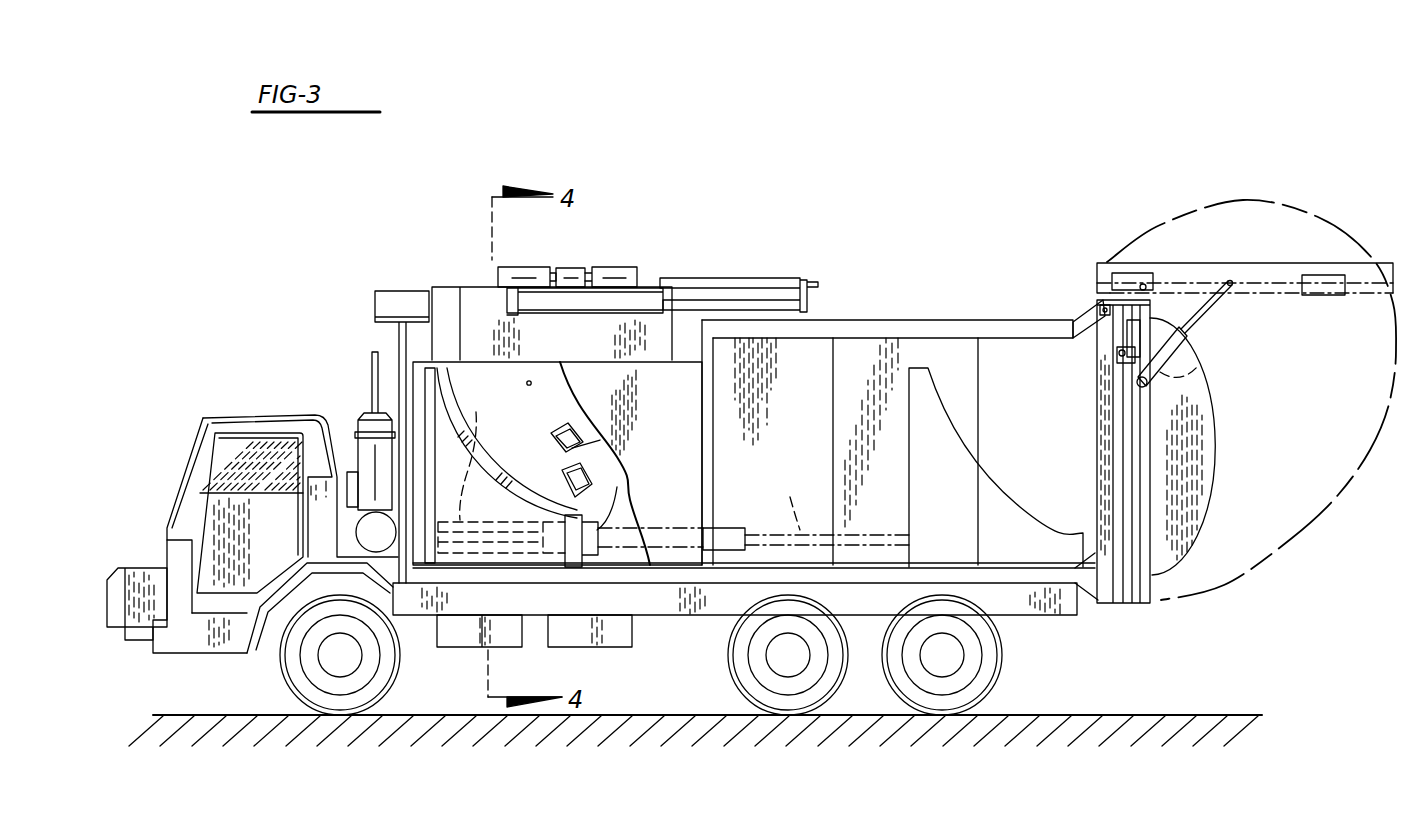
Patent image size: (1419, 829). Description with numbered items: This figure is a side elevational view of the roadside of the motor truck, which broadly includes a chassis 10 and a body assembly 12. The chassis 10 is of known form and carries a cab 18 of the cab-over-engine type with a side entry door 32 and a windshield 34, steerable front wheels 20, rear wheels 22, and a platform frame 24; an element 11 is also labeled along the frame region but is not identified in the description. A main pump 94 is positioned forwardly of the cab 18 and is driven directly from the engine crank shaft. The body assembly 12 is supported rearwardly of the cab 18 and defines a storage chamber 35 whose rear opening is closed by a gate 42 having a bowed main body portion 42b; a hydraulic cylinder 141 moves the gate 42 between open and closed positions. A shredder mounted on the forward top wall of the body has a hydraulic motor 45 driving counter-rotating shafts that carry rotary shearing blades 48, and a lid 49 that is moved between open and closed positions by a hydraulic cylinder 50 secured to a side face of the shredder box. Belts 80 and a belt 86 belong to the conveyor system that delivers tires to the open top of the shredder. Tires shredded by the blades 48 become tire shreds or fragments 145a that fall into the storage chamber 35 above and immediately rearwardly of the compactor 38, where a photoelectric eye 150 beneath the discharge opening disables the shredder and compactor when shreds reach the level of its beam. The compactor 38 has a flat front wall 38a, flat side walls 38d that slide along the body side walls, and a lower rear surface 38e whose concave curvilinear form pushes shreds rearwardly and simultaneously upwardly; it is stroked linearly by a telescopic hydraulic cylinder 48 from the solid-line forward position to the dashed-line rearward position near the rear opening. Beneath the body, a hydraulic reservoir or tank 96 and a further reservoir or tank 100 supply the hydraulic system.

The chassis 10 is at (878, 266).
The chassis 11 is at (720, 616).
The body assembly 12 is at (1012, 313).
The cab 18 is at (262, 418).
The front wheels 20 is at (296, 650).
The rear wheels 22 is at (990, 678).
The platform frame 24 is at (663, 612).
The side entry door 32 is at (273, 556).
The windshield 34 is at (185, 470).
The storage chamber 35 is at (888, 362).
The compactor 38 is at (530, 490).
The flat front wall 38a is at (418, 400).
The flat side walls 38d is at (617, 487).
The flat lower rear surface 38e is at (488, 460).
The gate 42 is at (1186, 440).
The bowed main body portion 42b is at (1307, 217).
The hydraulic motor 45 is at (395, 297).
The rotary shearing blades 48 is at (624, 471).
The lid 49 is at (765, 278).
The hydraulic cylinder 50 is at (567, 307).
The belts 80 is at (520, 267).
The belt 86 is at (572, 268).
The main pump 94 is at (125, 572).
The hydraulic reservoir 96 is at (455, 636).
The reservoir 100 is at (577, 634).
The hydraulic cylinder 141 is at (1197, 375).
The tire shreds 145a is at (620, 400).
The photoelectric eye 150 is at (533, 384).